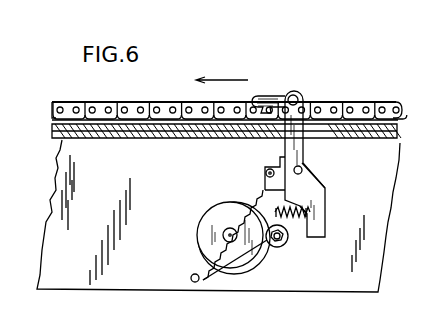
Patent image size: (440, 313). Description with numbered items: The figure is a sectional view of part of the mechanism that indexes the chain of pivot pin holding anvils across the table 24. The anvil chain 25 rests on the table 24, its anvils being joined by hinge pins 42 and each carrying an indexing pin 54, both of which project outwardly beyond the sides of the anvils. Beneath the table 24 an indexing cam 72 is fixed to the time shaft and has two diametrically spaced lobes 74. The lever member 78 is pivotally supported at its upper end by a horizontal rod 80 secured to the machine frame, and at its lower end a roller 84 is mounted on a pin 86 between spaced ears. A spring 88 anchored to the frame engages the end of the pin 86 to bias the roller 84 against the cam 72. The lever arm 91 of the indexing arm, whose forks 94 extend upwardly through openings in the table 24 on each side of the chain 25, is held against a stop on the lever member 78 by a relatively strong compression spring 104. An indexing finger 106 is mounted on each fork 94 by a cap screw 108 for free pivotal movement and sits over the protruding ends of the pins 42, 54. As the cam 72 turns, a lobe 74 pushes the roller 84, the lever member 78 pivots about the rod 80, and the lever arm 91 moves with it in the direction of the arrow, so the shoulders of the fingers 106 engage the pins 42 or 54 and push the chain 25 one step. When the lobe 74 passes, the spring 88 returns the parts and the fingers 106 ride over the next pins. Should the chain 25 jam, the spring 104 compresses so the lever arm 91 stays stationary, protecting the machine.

The table 24 is at (56, 134).
The anvil chain 25 is at (227, 97).
The hinge pin 42 is at (142, 106).
The indexing pin 54 is at (126, 106).
The indexing cam 72 is at (220, 215).
The cam lobe 74 is at (260, 205).
The lever member 78 is at (296, 182).
The horizontal rod 80 is at (270, 166).
The roller 84 is at (288, 238).
The pin 86 is at (283, 243).
The spring 88 is at (255, 268).
The lever arm 91 is at (310, 205).
The fork 94 is at (304, 113).
The compression spring 104 is at (304, 210).
The indexing finger 106 is at (268, 97).
The cap screw 108 is at (299, 95).